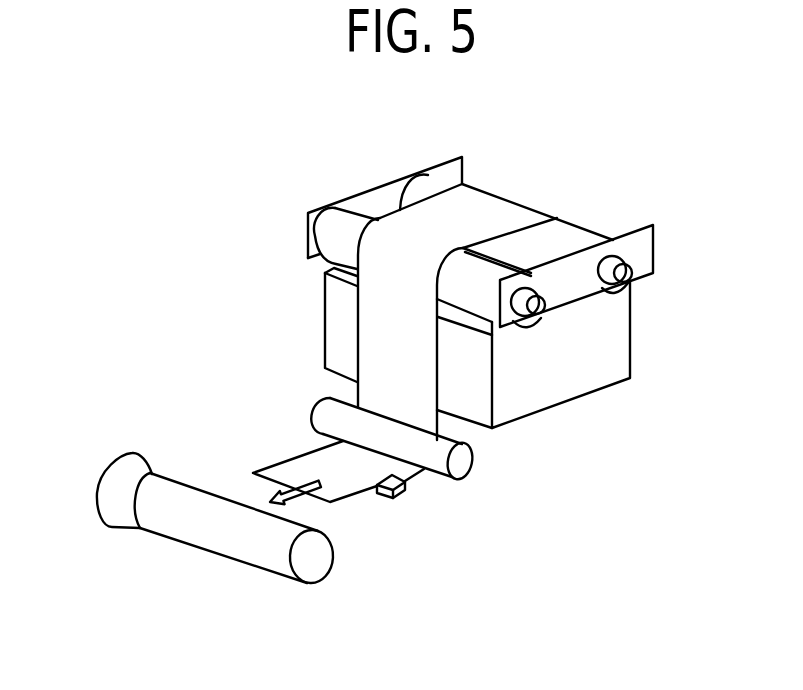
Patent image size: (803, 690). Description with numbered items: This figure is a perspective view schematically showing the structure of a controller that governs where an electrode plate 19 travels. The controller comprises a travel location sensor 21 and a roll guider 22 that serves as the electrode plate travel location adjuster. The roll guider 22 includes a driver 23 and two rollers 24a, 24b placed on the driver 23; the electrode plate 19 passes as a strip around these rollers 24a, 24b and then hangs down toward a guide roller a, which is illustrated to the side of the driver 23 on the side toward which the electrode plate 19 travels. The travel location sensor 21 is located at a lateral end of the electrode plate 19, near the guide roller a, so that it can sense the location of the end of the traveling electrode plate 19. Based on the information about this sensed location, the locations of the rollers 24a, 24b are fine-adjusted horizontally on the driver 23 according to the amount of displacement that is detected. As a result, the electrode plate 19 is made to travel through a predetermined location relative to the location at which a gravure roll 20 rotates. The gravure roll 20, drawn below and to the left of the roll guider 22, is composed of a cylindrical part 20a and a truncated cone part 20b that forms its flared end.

The roll guider 22 is at (482, 266).
The driver 23 is at (618, 345).
The roller 24a is at (336, 217).
The roller 24b is at (422, 188).
The electrode plate 19 is at (358, 342).
The guide roller a is at (460, 465).
The travel location sensor 21 is at (405, 490).
The gravure roll 20 is at (193, 557).
The cylindrical part 20a is at (210, 537).
The truncated cone part 20b is at (106, 520).